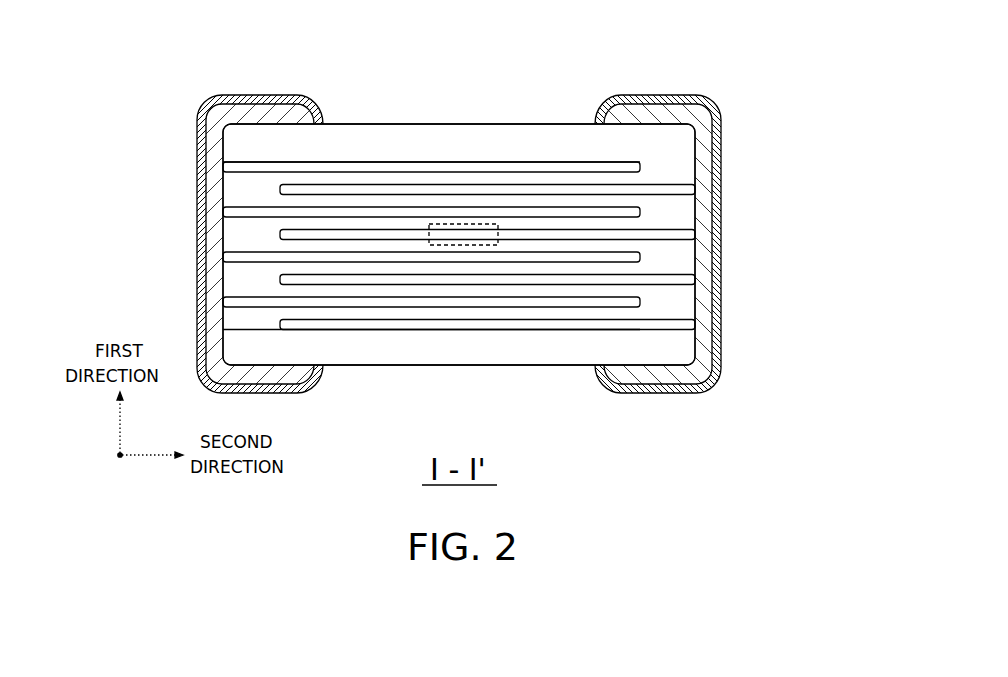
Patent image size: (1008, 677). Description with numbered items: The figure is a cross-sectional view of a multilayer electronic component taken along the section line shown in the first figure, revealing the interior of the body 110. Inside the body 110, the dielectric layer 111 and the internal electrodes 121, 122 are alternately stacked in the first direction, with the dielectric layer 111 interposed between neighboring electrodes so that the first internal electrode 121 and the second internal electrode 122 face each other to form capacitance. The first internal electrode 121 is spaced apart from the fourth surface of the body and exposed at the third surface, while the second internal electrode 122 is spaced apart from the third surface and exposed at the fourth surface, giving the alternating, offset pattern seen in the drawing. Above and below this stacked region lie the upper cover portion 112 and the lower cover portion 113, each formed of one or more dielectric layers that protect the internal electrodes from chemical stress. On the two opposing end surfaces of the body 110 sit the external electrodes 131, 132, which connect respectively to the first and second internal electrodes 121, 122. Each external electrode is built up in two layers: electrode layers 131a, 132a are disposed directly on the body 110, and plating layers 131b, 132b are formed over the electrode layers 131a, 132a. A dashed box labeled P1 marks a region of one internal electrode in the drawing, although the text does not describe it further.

The body 110 is at (392, 124).
The dielectric layer 111 is at (344, 200).
The upper cover portion 112 is at (465, 140).
The lower cover portion 113 is at (377, 347).
The first internal electrode 121 is at (530, 162).
The second internal electrode 122 is at (588, 188).
The first external electrode 131 is at (184, 244).
The electrode layer 131a is at (205, 173).
The plating layer 131b is at (215, 198).
The second external electrode 132 is at (736, 244).
The electrode layer 132a is at (714, 152).
The plating layer 132b is at (706, 178).
The region P1 of internal electrode P1 is at (463, 246).